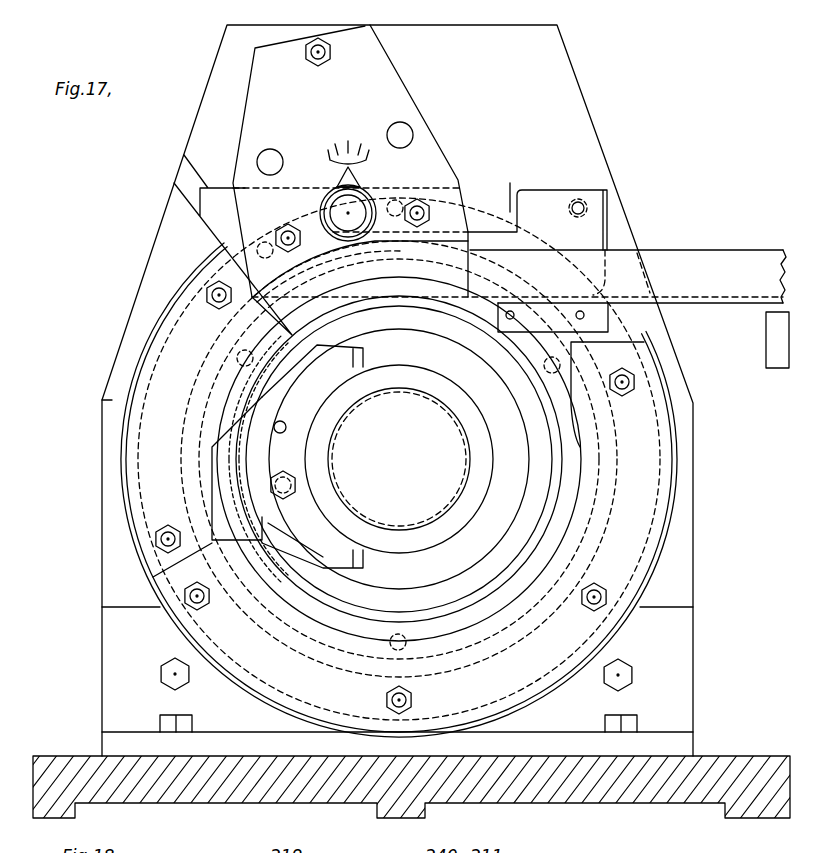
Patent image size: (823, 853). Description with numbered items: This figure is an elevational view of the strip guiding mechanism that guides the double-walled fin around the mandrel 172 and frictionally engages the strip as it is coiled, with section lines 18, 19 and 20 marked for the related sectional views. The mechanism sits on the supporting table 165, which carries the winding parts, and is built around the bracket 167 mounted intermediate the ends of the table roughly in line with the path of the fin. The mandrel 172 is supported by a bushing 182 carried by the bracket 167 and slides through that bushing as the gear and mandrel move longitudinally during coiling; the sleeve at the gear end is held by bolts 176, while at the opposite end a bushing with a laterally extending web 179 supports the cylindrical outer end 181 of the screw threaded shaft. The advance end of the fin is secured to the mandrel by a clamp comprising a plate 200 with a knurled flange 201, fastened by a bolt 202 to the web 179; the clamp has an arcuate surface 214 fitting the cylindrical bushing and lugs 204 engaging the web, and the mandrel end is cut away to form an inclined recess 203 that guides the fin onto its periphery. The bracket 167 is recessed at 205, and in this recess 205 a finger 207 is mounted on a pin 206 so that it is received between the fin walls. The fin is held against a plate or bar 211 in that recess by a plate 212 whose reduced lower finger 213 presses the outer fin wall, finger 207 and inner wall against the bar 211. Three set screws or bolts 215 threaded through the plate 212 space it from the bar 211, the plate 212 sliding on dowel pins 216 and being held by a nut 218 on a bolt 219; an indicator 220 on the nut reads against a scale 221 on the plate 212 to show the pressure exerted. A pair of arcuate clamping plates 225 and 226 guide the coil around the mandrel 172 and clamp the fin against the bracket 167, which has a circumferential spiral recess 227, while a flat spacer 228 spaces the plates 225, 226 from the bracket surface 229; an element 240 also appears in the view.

The supporting table 165 is at (712, 756).
The bracket 167 is at (562, 88).
The mandrel 172 is at (533, 543).
The bolts 176 is at (565, 480).
The web 179 is at (456, 569).
The cylindrical outer end of the screw threaded shaft 181 is at (455, 452).
The bushing 182 is at (553, 513).
The plate 200 is at (317, 390).
The knurled flange 201 is at (258, 464).
The bolt 202 is at (286, 492).
The inclined recess 203 is at (293, 360).
The lugs 204 is at (383, 348).
The recess 205 is at (618, 238).
The pin 206 is at (582, 205).
The finger 207 is at (522, 243).
The plate or bar 211 is at (208, 210).
The plate 212 is at (403, 98).
The reduced lower end portion or finger 213 is at (461, 260).
The arcuate surface 214 is at (300, 463).
The adjustable set screws or bolts 215 is at (318, 60).
The dowel pins 216 is at (272, 155).
The nut 218 is at (367, 200).
The bolt 219 is at (338, 215).
The indicator 220 is at (352, 177).
The scale 221 is at (345, 148).
The clamping plate 225 is at (152, 504).
The clamping plate 226 is at (205, 625).
The circumferential spiral recess 227 is at (140, 372).
The flat spacer 228 is at (150, 510).
The surface of the bracket 229 is at (152, 342).
The stop 240 is at (516, 185).
The section line 18 is at (30, 174).
The section line 19 is at (30, 420).
The section line 20 is at (399, 49).